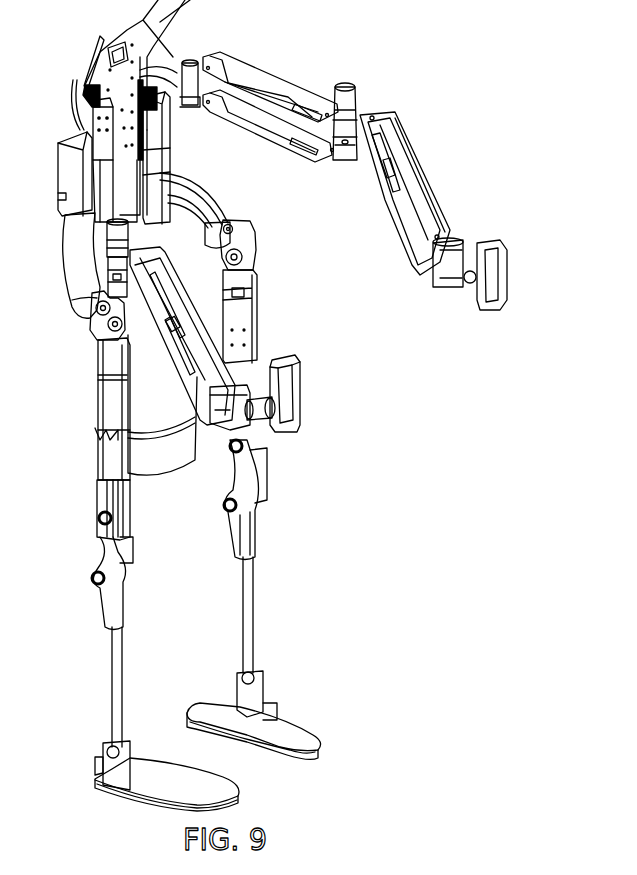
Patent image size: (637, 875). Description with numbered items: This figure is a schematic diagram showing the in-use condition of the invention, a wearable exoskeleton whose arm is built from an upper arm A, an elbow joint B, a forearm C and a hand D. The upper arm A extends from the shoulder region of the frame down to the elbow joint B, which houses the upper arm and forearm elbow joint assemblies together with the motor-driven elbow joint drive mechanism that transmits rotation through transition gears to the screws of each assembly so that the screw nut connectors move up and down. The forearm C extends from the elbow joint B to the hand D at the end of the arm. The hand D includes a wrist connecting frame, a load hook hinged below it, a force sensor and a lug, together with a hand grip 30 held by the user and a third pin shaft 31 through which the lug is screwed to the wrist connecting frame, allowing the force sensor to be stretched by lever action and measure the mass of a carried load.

The upper arm A is at (260, 83).
The elbow joint B is at (345, 90).
The forearm C is at (417, 173).
The hand D is at (465, 257).
The hand grip 30 is at (292, 382).
The third pin shaft 31 is at (270, 403).